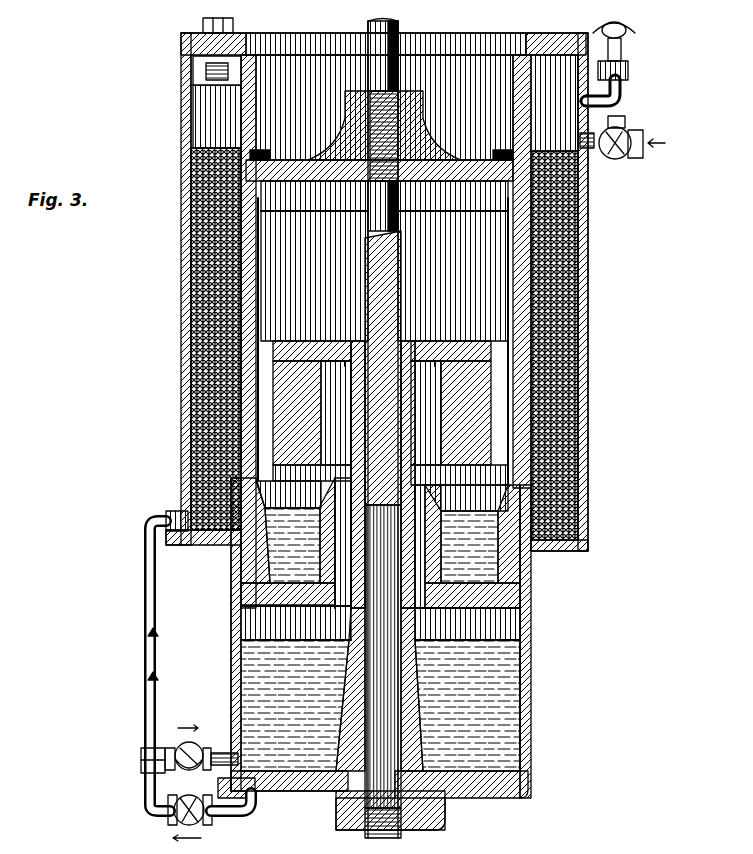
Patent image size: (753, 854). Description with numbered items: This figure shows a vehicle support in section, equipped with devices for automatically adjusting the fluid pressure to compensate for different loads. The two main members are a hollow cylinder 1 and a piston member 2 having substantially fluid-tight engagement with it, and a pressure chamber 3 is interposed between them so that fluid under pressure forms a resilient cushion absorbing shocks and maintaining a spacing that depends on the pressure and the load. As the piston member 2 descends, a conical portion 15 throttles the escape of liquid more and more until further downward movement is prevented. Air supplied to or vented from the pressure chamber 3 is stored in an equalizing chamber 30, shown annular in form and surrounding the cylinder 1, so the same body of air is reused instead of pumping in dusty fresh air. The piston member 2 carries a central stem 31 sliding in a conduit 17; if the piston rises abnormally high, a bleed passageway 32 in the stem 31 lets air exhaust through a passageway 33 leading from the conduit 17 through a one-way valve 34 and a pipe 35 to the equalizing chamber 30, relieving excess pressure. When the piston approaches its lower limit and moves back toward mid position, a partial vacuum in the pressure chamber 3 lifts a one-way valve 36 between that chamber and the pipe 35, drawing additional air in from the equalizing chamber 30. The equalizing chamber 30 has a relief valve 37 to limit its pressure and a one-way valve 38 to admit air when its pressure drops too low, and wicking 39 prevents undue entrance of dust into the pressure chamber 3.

The hollow cylinder 1 is at (518, 677).
The piston member 2 is at (507, 277).
The pressure chamber 3 is at (490, 617).
The conical portion 15 is at (398, 715).
The conduit 17 is at (372, 733).
The equalizing chamber 30 is at (178, 107).
The central stem 31 is at (377, 307).
The bleed passageway 32 is at (394, 410).
The passageway 33 is at (263, 787).
The one-way valve 34 is at (193, 818).
The pipe 35 is at (145, 643).
The one-way valve 36 is at (197, 733).
The relief valve 37 is at (613, 45).
The one-way valve 38 is at (612, 150).
The wicking 39 is at (183, 362).